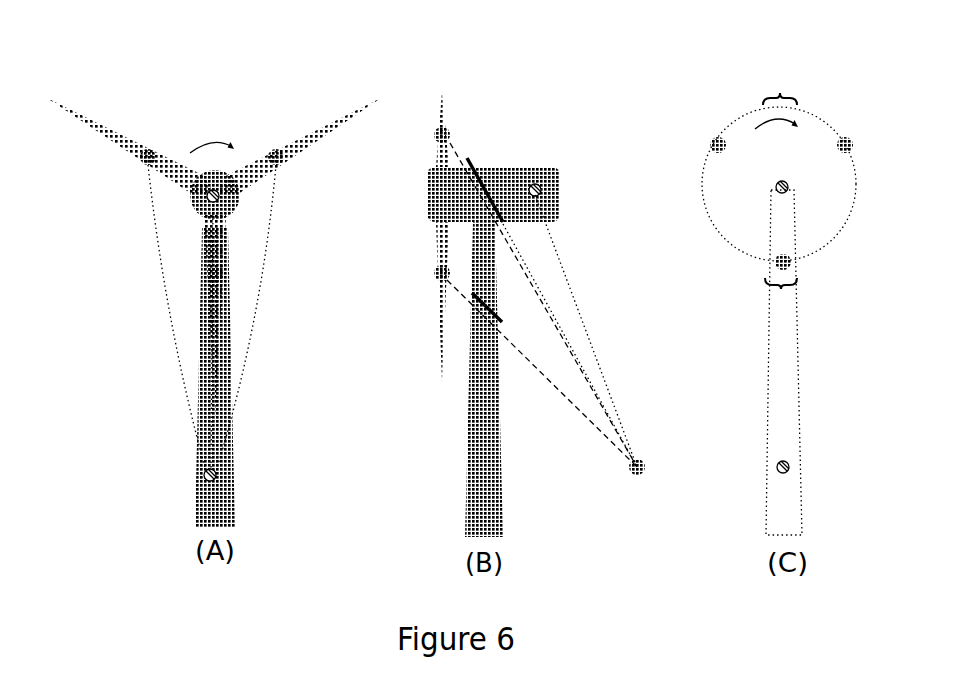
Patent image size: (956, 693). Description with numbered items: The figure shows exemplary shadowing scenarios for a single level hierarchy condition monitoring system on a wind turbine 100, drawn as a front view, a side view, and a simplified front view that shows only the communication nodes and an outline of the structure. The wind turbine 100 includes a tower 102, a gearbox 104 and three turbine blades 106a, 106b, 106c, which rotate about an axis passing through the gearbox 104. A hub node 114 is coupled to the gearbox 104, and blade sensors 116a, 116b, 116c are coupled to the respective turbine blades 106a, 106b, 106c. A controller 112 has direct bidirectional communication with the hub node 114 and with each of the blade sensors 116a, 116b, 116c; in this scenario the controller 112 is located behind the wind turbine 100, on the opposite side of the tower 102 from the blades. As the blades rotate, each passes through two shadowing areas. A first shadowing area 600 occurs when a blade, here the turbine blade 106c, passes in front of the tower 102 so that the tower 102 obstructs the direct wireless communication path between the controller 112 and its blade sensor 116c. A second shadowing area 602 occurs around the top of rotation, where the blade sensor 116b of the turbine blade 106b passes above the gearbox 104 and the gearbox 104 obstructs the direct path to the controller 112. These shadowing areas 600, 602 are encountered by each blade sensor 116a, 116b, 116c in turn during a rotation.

The wind turbine 100 is at (154, 77).
The tower 102 is at (230, 435).
The gearbox 104 is at (238, 208).
The turbine blade 106a is at (140, 120).
The turbine blade 106b is at (295, 135).
The turbine blade 106c is at (202, 235).
The controller 112 is at (205, 473).
The hub node 114 is at (208, 200).
The blade sensor 116a is at (142, 160).
The blade sensor 116b is at (283, 160).
The blade sensor 116c is at (223, 277).
The first shadowing area 600 is at (497, 304).
The second shadowing area 602 is at (505, 197).